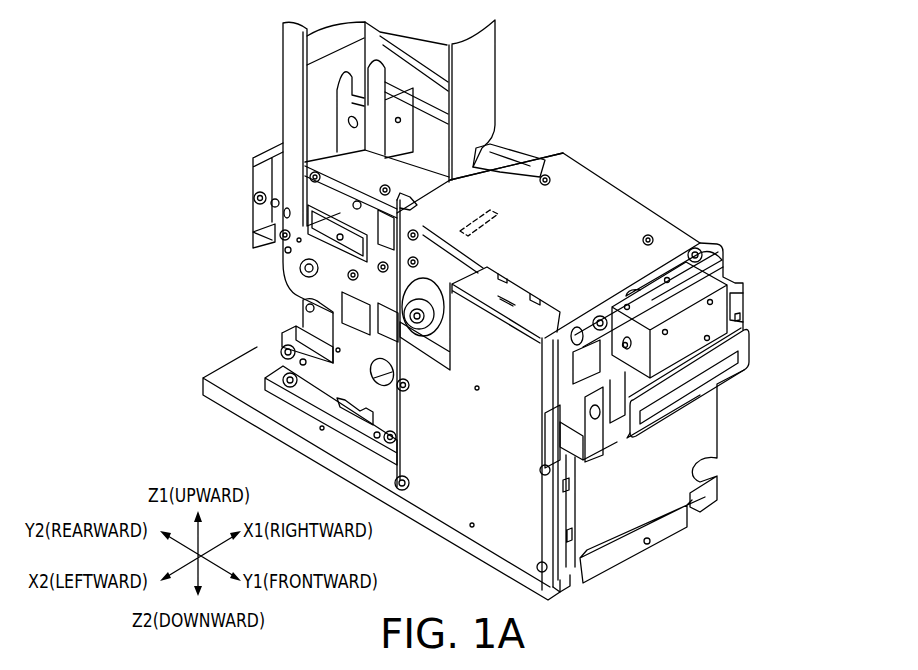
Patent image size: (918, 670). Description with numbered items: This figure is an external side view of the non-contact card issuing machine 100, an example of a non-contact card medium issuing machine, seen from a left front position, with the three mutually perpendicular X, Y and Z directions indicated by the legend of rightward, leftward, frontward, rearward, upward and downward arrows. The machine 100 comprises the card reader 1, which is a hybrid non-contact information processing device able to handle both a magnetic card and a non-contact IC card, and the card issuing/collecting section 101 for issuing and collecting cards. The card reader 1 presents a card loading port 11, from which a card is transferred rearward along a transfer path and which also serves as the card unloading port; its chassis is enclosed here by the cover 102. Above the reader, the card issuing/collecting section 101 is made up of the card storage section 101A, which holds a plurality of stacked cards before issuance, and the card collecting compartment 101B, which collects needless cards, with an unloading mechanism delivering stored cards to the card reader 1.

The card reader 1 is at (453, 310).
The card loading port 11 is at (690, 393).
The non-contact card issuing machine 100 is at (624, 329).
The card issuing/collecting section 101 is at (315, 191).
The card storage section 101A is at (399, 166).
The card collecting compartment 101B is at (241, 316).
The cover 102 is at (632, 211).